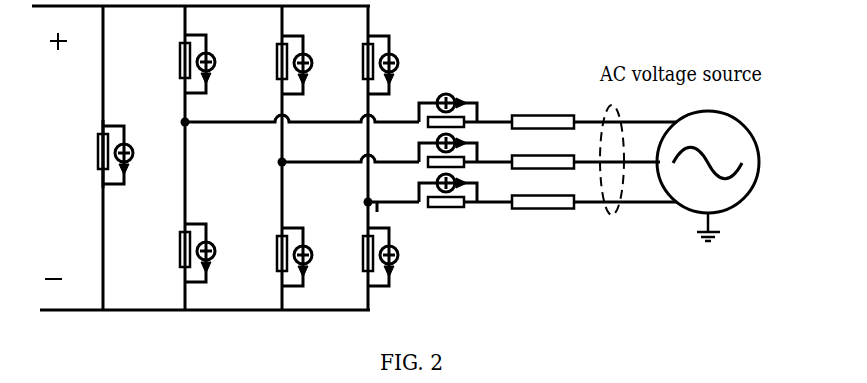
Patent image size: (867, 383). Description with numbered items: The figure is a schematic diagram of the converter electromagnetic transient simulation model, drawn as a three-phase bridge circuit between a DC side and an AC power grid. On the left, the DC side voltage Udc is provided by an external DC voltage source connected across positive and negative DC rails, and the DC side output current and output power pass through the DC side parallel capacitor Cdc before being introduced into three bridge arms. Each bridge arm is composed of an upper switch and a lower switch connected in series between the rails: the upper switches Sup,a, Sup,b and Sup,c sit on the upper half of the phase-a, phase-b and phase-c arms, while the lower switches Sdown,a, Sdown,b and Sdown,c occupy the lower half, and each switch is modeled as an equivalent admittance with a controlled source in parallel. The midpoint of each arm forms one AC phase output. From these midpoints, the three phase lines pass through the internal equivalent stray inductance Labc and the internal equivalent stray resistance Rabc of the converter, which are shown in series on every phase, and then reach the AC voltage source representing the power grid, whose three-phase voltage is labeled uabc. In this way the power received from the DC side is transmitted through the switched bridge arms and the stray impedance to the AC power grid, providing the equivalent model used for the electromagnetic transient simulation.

The DC side voltage Udc is at (83, 155).
The DC side parallel capacitor Cdc is at (128, 180).
The upper switch of phase-a bridge arm Sup,a is at (172, 66).
The upper switch of phase-b bridge arm Sup,b is at (270, 67).
The upper switch of phase-c bridge arm Sup,c is at (360, 67).
The lower switch of phase-a bridge arm Sdown,a is at (164, 258).
The lower switch of phase-b bridge arm Sdown,b is at (265, 263).
The lower switch of phase-c bridge arm Sdown,c is at (353, 263).
The internal equivalent stray inductance Labc is at (448, 174).
The internal equivalent stray resistance Rabc is at (543, 186).
The AC power grid voltage uabc is at (616, 180).